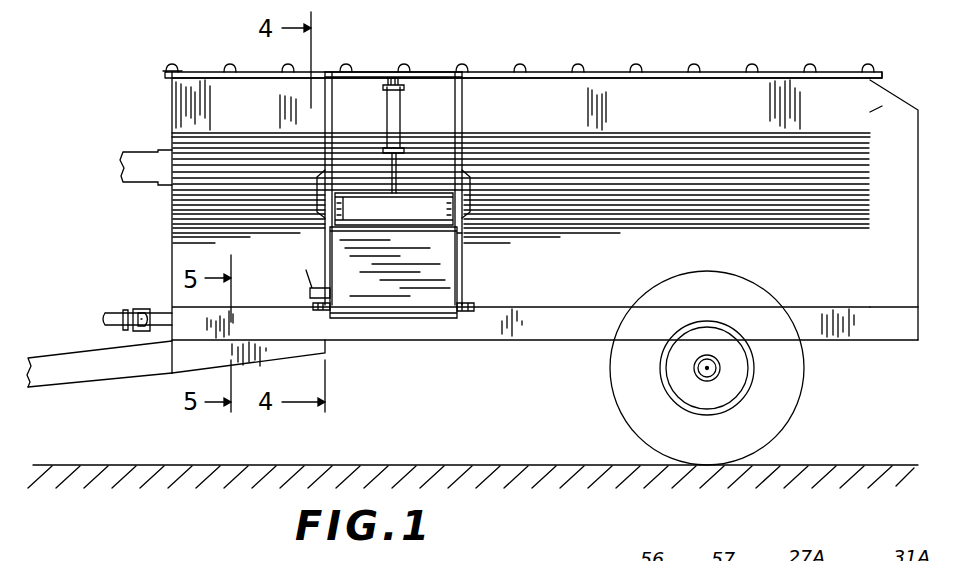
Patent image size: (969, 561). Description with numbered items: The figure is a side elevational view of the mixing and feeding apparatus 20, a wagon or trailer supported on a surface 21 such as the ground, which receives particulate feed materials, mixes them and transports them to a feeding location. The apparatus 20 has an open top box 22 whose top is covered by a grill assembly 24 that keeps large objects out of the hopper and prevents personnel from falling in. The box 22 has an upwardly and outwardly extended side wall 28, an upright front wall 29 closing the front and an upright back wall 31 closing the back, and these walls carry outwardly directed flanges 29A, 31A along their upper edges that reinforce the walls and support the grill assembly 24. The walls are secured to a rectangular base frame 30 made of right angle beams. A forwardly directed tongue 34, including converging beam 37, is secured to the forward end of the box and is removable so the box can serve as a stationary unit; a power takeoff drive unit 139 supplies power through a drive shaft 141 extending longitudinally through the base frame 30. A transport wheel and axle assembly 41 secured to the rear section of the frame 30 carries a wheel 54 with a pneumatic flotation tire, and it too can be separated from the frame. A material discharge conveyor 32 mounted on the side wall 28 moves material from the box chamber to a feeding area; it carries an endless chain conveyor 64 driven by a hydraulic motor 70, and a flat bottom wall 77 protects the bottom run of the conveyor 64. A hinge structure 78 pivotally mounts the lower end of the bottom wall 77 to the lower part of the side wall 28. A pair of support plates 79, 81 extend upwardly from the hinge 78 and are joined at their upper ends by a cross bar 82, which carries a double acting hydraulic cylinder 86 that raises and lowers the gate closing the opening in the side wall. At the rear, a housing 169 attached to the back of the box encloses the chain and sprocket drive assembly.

The mixing and feeding apparatus 20 is at (645, 36).
The surface 21 is at (828, 465).
The box 22 is at (156, 107).
The grill assembly 24 is at (535, 58).
The side wall 28 is at (764, 100).
The front wall 29 is at (170, 223).
The flange 29A is at (170, 78).
The base frame 30 is at (556, 326).
The back wall 31 is at (888, 100).
The flange 31A is at (880, 78).
The material discharge conveyor 32 is at (480, 235).
The tongue 34 is at (64, 338).
The beam 37 is at (92, 372).
The transport wheel and axle assembly 41 is at (582, 397).
The wheel 54 is at (645, 414).
The endless chain conveyor 64 is at (418, 193).
The hydraulic motor 70 is at (310, 292).
The bottom wall 77 is at (398, 286).
The hinge structure 78 is at (318, 309).
The support plate 79 is at (322, 116).
The support plate 81 is at (466, 104).
The cross bar 82 is at (430, 72).
The hydraulic cylinder 86 is at (378, 100).
The power takeoff drive unit 139 is at (127, 310).
The drive shaft 141 is at (163, 328).
The housing 169 is at (892, 336).